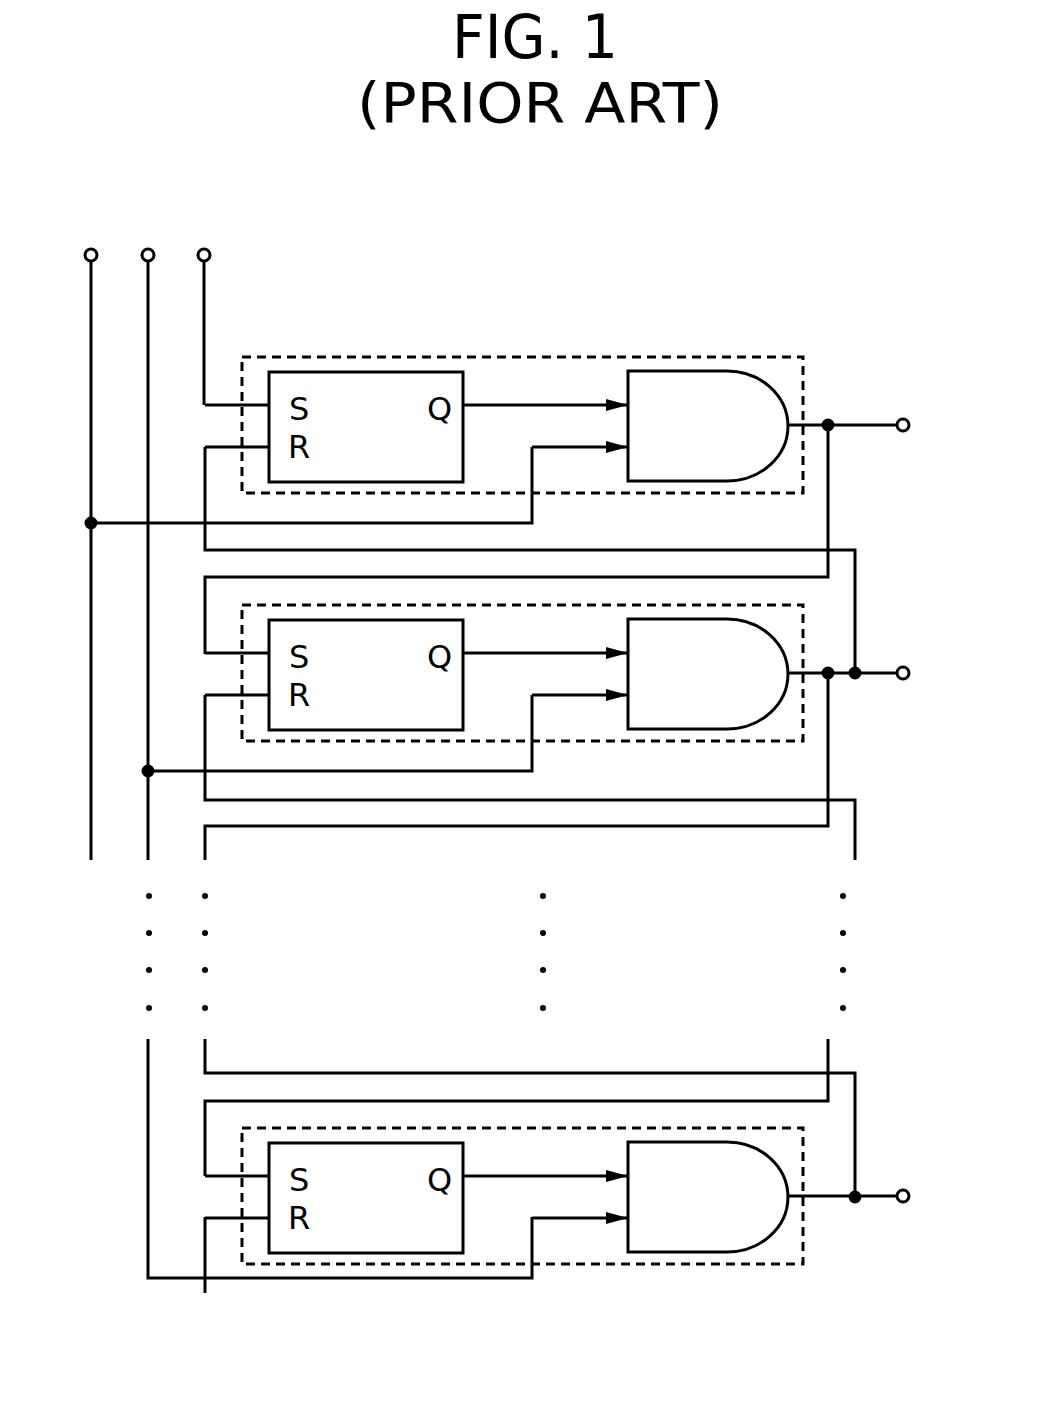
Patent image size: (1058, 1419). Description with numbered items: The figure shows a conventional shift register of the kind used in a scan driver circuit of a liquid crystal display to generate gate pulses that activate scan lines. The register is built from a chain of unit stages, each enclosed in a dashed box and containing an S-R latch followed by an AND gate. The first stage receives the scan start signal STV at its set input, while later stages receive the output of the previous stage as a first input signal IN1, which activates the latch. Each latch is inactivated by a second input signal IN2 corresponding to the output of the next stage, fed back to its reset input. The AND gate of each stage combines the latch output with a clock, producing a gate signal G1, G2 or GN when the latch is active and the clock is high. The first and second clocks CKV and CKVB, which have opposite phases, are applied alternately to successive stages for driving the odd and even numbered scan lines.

The first clock CKV is at (292, 536).
The second clock CKVB is at (323, 745).
The scan start signal STV is at (215, 308).
The gate signal of first stage G1 is at (891, 426).
The gate signal of second stage G2 is at (891, 674).
The gate signal of N-th stage GN is at (906, 1198).
The first input signal IN1 is at (545, 539).
The second input signal IN2 is at (559, 560).